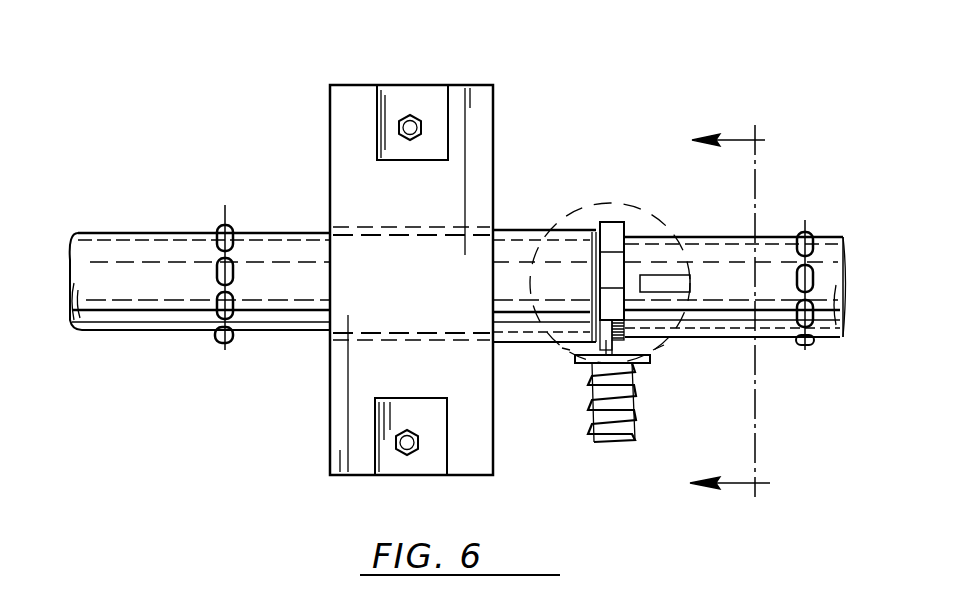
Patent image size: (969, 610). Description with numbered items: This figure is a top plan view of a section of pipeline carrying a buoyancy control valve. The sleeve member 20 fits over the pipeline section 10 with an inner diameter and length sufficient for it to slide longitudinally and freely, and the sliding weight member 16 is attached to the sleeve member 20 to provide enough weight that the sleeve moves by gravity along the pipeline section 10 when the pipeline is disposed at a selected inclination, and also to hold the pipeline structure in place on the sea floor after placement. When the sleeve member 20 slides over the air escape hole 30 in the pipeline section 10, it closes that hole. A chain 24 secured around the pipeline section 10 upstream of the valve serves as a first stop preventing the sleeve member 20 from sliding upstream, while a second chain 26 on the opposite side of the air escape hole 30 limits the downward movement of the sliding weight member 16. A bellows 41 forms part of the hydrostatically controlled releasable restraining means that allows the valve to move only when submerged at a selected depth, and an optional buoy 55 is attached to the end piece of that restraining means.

The pipeline section 10 is at (113, 235).
The sliding weight member 16 is at (356, 78).
The sleeve member 20 is at (528, 230).
The chain 24 is at (225, 220).
The chain 26 is at (805, 230).
The air escape hole 30 is at (667, 280).
The bellows 41 is at (625, 392).
The buoy 55 is at (615, 205).